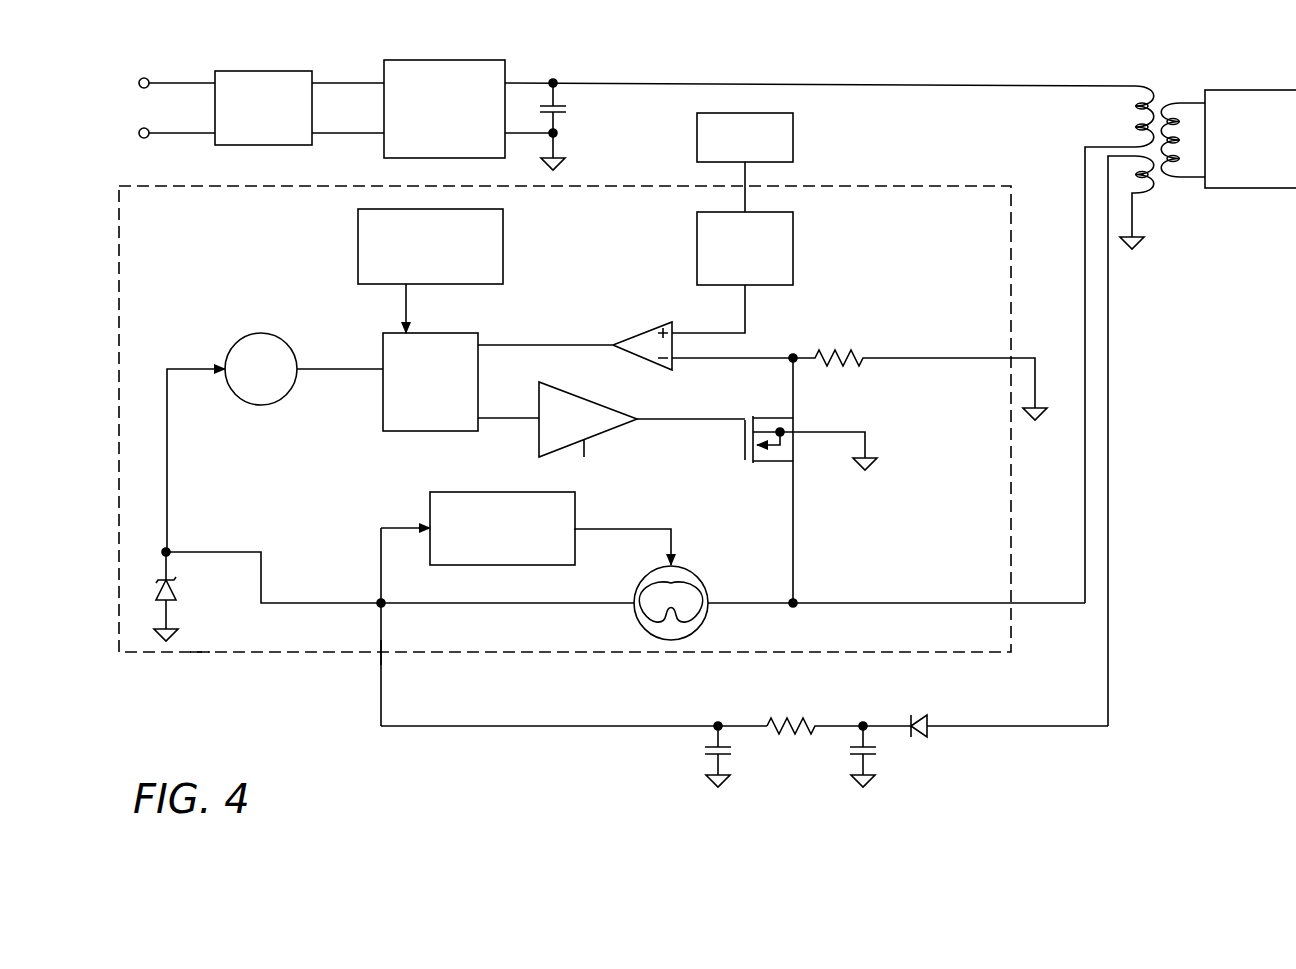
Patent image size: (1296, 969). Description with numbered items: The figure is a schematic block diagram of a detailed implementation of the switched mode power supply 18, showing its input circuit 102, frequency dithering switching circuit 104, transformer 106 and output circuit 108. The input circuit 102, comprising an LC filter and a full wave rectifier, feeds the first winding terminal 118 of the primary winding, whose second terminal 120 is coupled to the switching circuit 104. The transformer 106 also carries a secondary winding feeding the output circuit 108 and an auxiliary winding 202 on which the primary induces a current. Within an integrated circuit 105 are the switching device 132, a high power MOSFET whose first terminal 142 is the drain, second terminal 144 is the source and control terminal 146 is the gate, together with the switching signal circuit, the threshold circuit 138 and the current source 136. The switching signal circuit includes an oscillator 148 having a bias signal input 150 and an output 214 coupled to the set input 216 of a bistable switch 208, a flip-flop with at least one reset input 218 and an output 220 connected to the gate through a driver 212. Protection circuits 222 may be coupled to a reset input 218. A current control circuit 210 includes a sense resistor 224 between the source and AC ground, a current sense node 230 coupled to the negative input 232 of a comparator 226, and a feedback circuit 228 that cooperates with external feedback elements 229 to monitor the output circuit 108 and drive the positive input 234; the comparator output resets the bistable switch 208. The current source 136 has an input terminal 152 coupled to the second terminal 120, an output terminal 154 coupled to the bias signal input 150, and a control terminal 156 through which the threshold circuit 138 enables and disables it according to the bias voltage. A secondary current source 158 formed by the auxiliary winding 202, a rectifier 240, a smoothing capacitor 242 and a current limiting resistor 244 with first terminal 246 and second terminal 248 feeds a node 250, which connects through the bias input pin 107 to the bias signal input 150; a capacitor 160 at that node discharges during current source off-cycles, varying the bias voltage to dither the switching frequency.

The power supply 18 is at (1182, 633).
The input circuit 102 is at (410, 38).
The frequency dithering switching circuit 104 is at (140, 168).
The integrated circuit 105 is at (198, 652).
The transformer 106 is at (1127, 366).
The bias input pin 107 is at (380, 652).
The output circuit 108 is at (1243, 90).
The first winding terminal 118 is at (1133, 85).
The second terminal 120 is at (1133, 143).
The switching device 132 is at (764, 488).
The current source 136 is at (705, 582).
The threshold circuit 138 is at (430, 513).
The first terminal 142 is at (795, 462).
The second terminal 144 is at (795, 420).
The control terminal 146 is at (743, 425).
The oscillator 148 is at (259, 333).
The bias signal input 150 is at (222, 373).
The input terminal 152 is at (706, 605).
The output terminal 154 is at (636, 605).
The control terminal 156 is at (675, 565).
The secondary current source 158 is at (744, 730).
The capacitor 160 is at (706, 758).
The auxiliary winding 202 is at (1150, 193).
The bistable switch 208 is at (383, 340).
The current control circuit 210 is at (885, 256).
The driver 212 is at (540, 450).
The output 214 is at (296, 373).
The set input 216 is at (383, 372).
The reset input 218 is at (402, 325).
The output 220 is at (478, 425).
The protection circuits 222 is at (358, 242).
The sense resistor 224 is at (858, 345).
The comparator 226 is at (640, 330).
The feedback circuit 228 is at (793, 250).
The external feedback elements 229 is at (793, 140).
The current sense node 230 is at (797, 355).
The negative input 232 is at (672, 366).
The positive input 234 is at (682, 322).
The rectifier 240 is at (920, 712).
The smoothing capacitor 242 is at (850, 758).
The current limiting resistor 244 is at (780, 722).
The first terminal 246 is at (860, 722).
The second terminal 248 is at (716, 722).
The node 250 is at (381, 600).